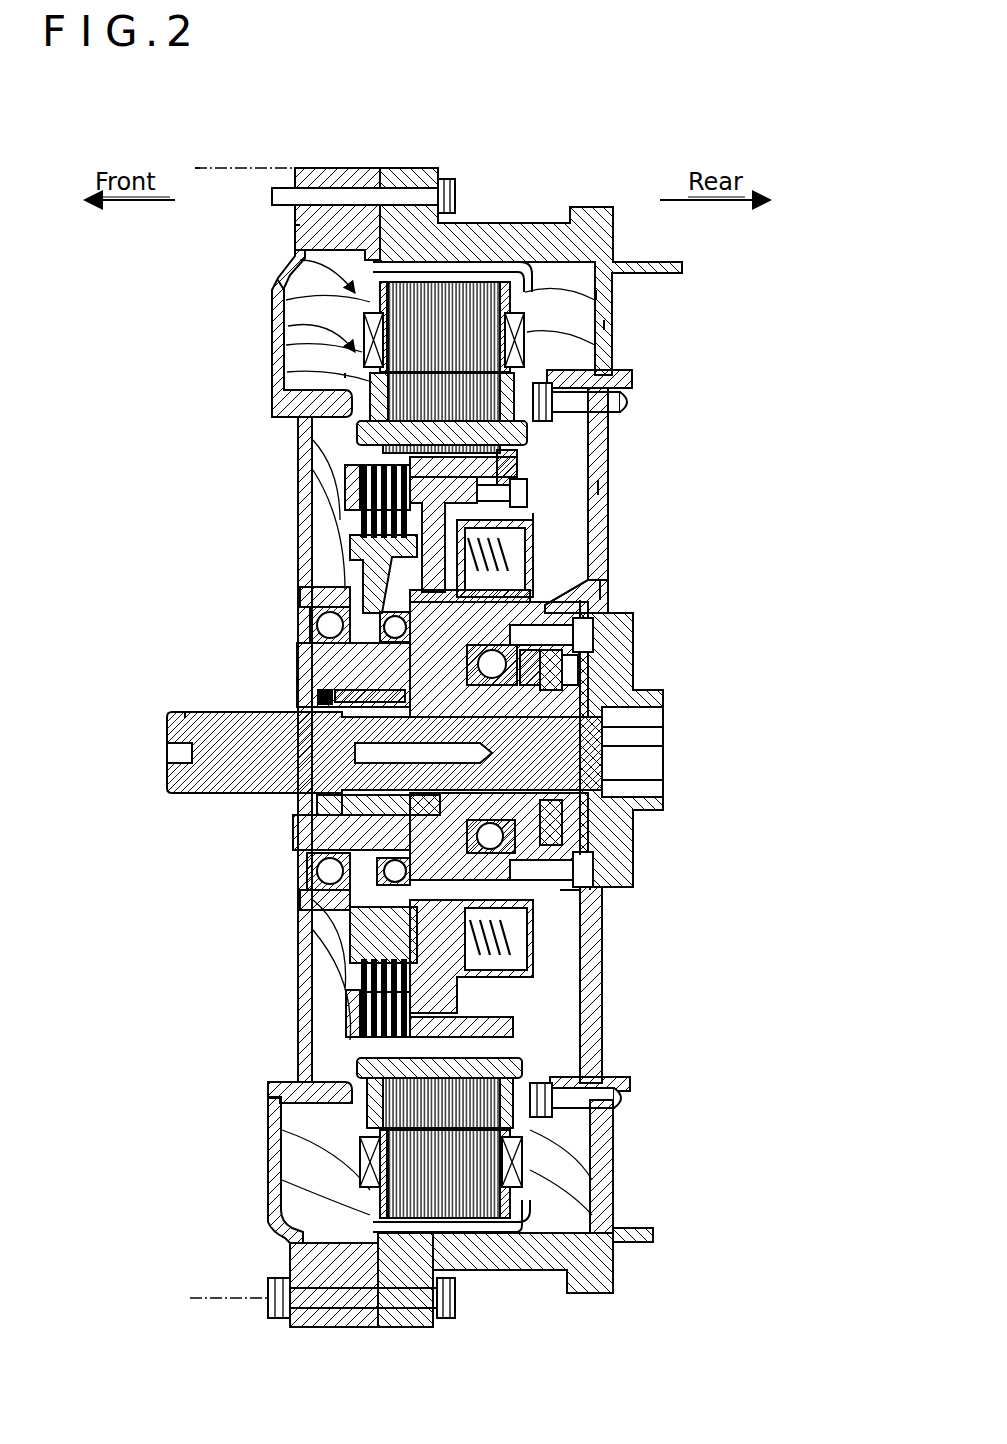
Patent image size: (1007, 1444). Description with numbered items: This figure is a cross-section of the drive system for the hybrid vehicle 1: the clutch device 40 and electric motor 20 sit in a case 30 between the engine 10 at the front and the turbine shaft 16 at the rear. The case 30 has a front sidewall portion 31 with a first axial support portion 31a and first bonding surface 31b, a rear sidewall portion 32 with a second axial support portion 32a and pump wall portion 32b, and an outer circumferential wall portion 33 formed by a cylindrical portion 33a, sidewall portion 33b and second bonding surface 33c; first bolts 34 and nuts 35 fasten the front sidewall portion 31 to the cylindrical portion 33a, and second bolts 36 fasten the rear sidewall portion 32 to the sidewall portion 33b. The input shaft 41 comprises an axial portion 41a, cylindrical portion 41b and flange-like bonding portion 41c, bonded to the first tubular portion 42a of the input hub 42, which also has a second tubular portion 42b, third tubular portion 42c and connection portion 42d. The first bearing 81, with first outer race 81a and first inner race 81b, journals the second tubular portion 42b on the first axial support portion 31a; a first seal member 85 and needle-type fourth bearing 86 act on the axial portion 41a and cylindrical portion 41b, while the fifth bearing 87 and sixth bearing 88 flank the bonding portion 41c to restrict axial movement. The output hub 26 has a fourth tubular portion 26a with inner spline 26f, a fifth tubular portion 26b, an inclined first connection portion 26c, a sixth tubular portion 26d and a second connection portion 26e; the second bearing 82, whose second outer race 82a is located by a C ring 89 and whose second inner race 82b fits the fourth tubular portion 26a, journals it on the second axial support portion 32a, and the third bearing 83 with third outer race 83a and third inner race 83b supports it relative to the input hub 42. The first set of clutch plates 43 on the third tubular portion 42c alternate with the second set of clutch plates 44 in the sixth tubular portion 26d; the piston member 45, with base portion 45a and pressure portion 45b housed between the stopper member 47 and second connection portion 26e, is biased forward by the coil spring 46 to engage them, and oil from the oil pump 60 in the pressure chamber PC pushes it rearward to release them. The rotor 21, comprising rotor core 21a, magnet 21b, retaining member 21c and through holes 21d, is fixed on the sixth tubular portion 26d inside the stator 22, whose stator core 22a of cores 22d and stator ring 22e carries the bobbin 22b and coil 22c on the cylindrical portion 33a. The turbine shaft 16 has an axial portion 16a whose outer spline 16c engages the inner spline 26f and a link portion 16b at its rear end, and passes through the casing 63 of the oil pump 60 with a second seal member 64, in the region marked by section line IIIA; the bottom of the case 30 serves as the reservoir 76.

The hybrid vehicle 1 is at (339, 112).
The engine 10 is at (198, 135).
The turbine shaft 16 is at (634, 750).
The axial portion 16a is at (666, 741).
The link portion 16b is at (675, 627).
The outer spline 16c is at (666, 806).
The electric motor 20 is at (277, 746).
The rotor 21 is at (408, 465).
The rotor core 21a is at (613, 362).
The magnet 21b is at (275, 360).
The retaining member 21c is at (660, 481).
The through holes 21d is at (512, 410).
The stator 22 is at (462, 691).
The stator core 22a is at (247, 274).
The bobbin 22b is at (653, 238).
The coil 22c is at (636, 287).
The cores 22d is at (598, 181).
The stator ring 22e is at (257, 210).
The output hub 26 is at (617, 1060).
The fourth tubular portion 26a is at (658, 784).
The fifth tubular portion 26b is at (608, 913).
The first connection portion 26c is at (647, 884).
The sixth tubular portion 26d is at (523, 465).
The second connection portion 26e is at (599, 543).
The inner spline 26f is at (658, 719).
The case 30 is at (265, 136).
The front sidewall portion 31 is at (276, 384).
The first axial support portion 31a is at (418, 658).
The first bonding surface 31b is at (375, 172).
The rear sidewall portion 32 is at (623, 518).
The second axial support portion 32a is at (598, 578).
The pump wall portion 32b is at (619, 835).
The outer circumferential wall portion 33 is at (461, 676).
The cylindrical portion 33a is at (452, 699).
The sidewall portion 33b is at (645, 321).
The second bonding surface 33c is at (333, 181).
The first bolts 34 is at (396, 717).
The nuts 35 is at (240, 1279).
The second bolts 36 is at (605, 402).
The clutch device 40 is at (367, 466).
The input shaft 41 is at (358, 699).
The axial portion 41a is at (141, 749).
The cylindrical portion 41b is at (340, 809).
The bonding portion 41c is at (291, 818).
The input hub 42 is at (375, 537).
The first tubular portion 42a is at (381, 612).
The second tubular portion 42b is at (291, 559).
The third tubular portion 42c is at (379, 488).
The connection portion 42d is at (324, 554).
The first set of clutch plates 43 is at (325, 491).
The second set of clutch plates 44 is at (292, 414).
The piston member 45 is at (529, 975).
The base portion 45a is at (598, 954).
The pressure portion 45b is at (597, 1086).
The coil spring 46 is at (530, 1016).
The stopper member 47 is at (321, 998).
The oil pump 60 is at (641, 849).
The casing 63 is at (643, 592).
The second seal member 64 is at (699, 701).
The reservoir 76 is at (476, 1192).
The first bearing 81 is at (394, 836).
The first outer race 81a is at (296, 877).
The first inner race 81b is at (262, 851).
The second bearing 82 is at (613, 670).
The second outer race 82a is at (608, 660).
The second inner race 82b is at (653, 676).
The third bearing 83 is at (327, 935).
The third outer race 83a is at (290, 964).
The third inner race 83b is at (291, 906).
The first seal member 85 is at (280, 688).
The fourth bearing 86 is at (313, 674).
The fifth bearing 87 is at (201, 686).
The sixth bearing 88 is at (142, 703).
The C ring 89 is at (653, 573).
The pressure chamber PC is at (592, 517).
The section line IIIA is at (663, 844).